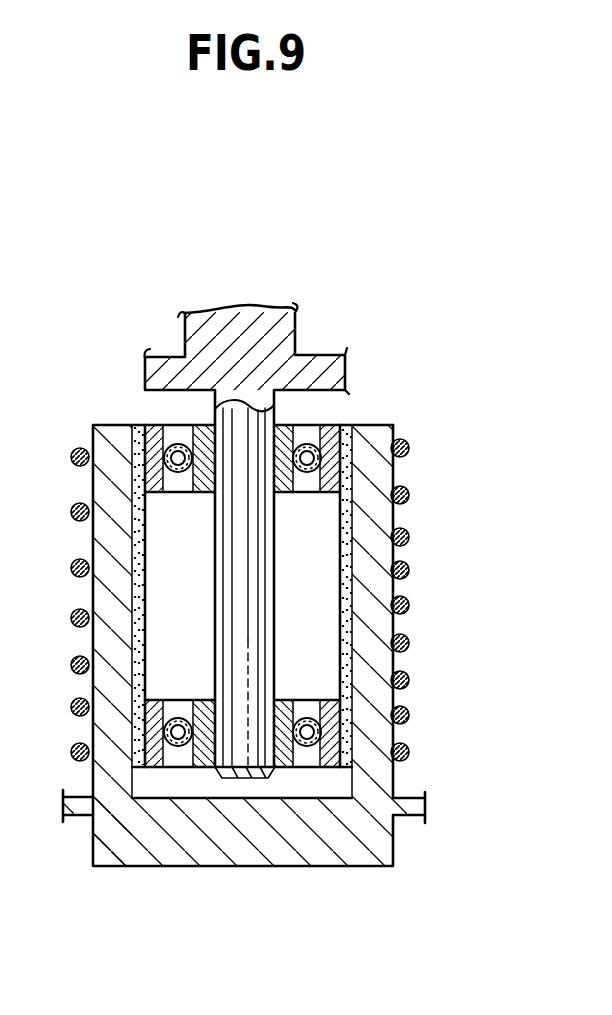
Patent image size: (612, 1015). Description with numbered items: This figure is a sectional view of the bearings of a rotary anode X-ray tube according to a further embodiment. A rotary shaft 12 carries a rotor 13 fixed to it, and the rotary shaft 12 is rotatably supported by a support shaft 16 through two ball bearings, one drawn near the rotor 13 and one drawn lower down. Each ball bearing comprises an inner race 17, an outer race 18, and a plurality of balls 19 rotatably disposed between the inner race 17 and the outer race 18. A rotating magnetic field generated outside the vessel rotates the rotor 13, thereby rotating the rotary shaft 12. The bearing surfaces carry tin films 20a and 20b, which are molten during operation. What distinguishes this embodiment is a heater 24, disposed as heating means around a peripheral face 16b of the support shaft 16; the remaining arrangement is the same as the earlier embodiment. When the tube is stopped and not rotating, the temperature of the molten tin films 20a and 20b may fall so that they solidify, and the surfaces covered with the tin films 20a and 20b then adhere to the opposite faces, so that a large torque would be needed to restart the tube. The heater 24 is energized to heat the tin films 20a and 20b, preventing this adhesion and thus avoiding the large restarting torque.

The rotary shaft 12 is at (275, 612).
The rotor 13 is at (325, 358).
The support shaft 16 is at (393, 780).
The peripheral face 16b is at (393, 662).
The inner race 17 is at (204, 498).
The outer race 18 is at (148, 512).
The balls 19 is at (178, 486).
The tin film 20a is at (178, 446).
The tin film 20b is at (138, 424).
The heater 24 is at (410, 568).